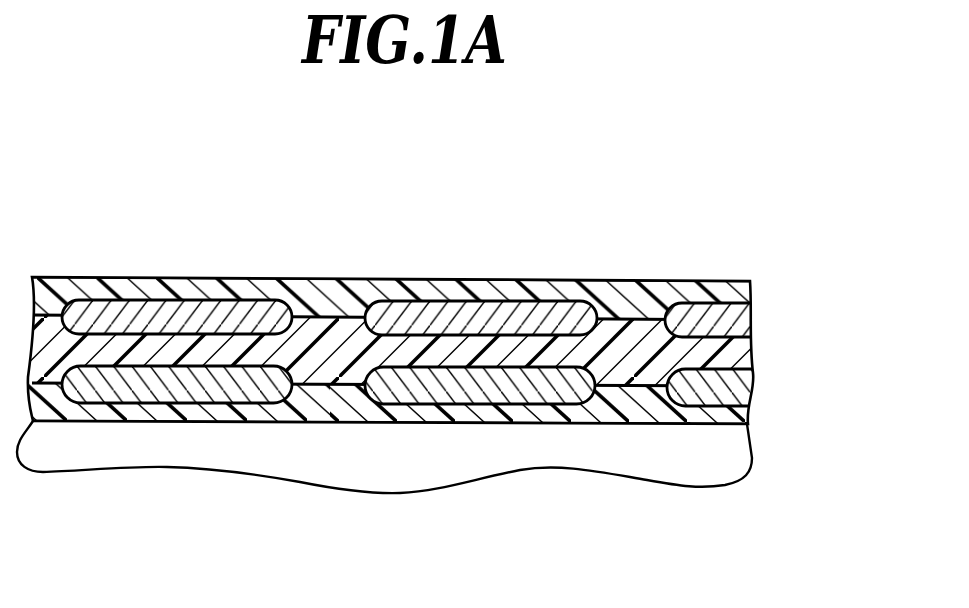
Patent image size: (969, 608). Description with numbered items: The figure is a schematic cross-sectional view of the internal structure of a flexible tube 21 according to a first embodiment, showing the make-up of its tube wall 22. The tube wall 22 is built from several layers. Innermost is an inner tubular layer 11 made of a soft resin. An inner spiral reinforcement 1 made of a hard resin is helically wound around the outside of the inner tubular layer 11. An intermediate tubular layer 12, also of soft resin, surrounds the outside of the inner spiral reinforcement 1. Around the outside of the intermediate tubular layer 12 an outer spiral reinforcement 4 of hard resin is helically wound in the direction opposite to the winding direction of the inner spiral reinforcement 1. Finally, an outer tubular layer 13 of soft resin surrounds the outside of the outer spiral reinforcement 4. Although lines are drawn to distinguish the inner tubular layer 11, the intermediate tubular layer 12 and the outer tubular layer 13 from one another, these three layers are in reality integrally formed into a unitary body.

The inner spiral reinforcement 1 is at (490, 388).
The outer spiral reinforcement 4 is at (497, 312).
The inner tubular layer 11 is at (725, 416).
The intermediate tubular layer 12 is at (740, 352).
The outer tubular layer 13 is at (710, 290).
The flexible tube 21 is at (327, 224).
The tube wall 22 is at (190, 285).